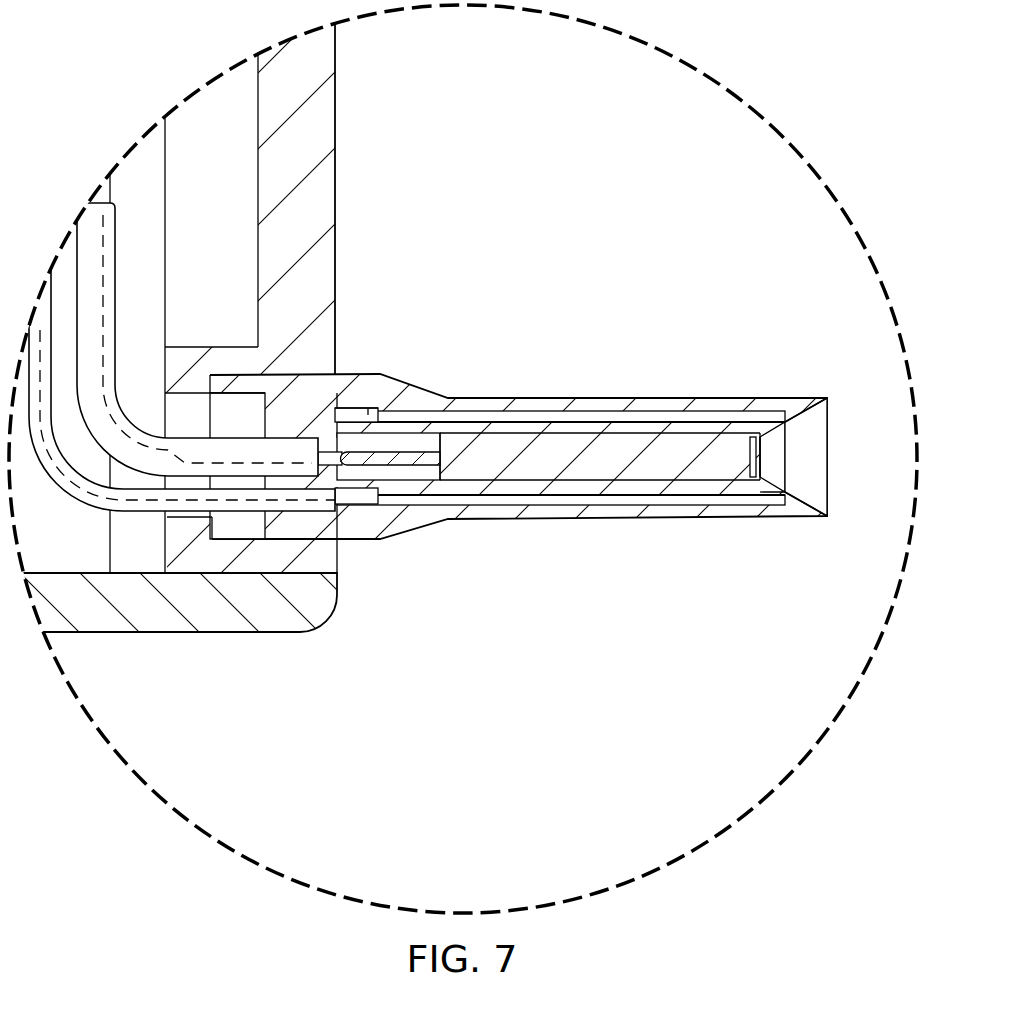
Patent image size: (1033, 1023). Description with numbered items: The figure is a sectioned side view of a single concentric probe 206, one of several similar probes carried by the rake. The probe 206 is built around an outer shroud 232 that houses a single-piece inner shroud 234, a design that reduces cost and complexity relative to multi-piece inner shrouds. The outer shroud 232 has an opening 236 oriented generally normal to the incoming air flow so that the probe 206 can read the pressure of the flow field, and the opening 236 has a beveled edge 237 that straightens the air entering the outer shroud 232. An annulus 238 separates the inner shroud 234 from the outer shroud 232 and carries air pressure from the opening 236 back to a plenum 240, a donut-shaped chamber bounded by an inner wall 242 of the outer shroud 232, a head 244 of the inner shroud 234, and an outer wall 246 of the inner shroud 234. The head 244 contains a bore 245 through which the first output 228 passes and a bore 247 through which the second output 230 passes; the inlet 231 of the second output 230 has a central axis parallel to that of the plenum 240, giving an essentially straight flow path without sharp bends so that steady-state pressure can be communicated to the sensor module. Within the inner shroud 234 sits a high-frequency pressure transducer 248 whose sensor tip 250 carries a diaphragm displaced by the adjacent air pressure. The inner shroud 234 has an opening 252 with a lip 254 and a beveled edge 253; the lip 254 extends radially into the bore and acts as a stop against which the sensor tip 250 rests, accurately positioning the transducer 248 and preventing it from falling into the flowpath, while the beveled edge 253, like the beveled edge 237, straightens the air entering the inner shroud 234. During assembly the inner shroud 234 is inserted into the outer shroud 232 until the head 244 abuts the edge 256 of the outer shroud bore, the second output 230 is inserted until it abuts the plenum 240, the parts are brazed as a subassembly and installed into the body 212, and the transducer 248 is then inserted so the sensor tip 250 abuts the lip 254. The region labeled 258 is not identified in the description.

The probe 206 is at (664, 312).
The body 212 is at (337, 196).
The first output 228 is at (115, 243).
The second output 230 is at (78, 497).
The inlet 231 is at (328, 548).
The outer shroud 232 is at (485, 520).
The inner shroud 234 is at (557, 398).
The opening 236 is at (830, 490).
The beveled edge 237 is at (808, 500).
The annulus 238 is at (700, 497).
The plenum 240 is at (364, 504).
The inner wall 242 is at (366, 404).
The head 244 is at (305, 372).
The bore 245 is at (242, 362).
The outer wall 246 is at (343, 507).
The bore 247 is at (272, 513).
The high-frequency pressure transducer 248 is at (612, 472).
The sensor tip 250 is at (765, 460).
The opening 252 is at (786, 480).
The beveled edge 253 is at (792, 430).
The lip 254 is at (730, 423).
The edge 256 is at (350, 410).
The gap 258 is at (215, 352).